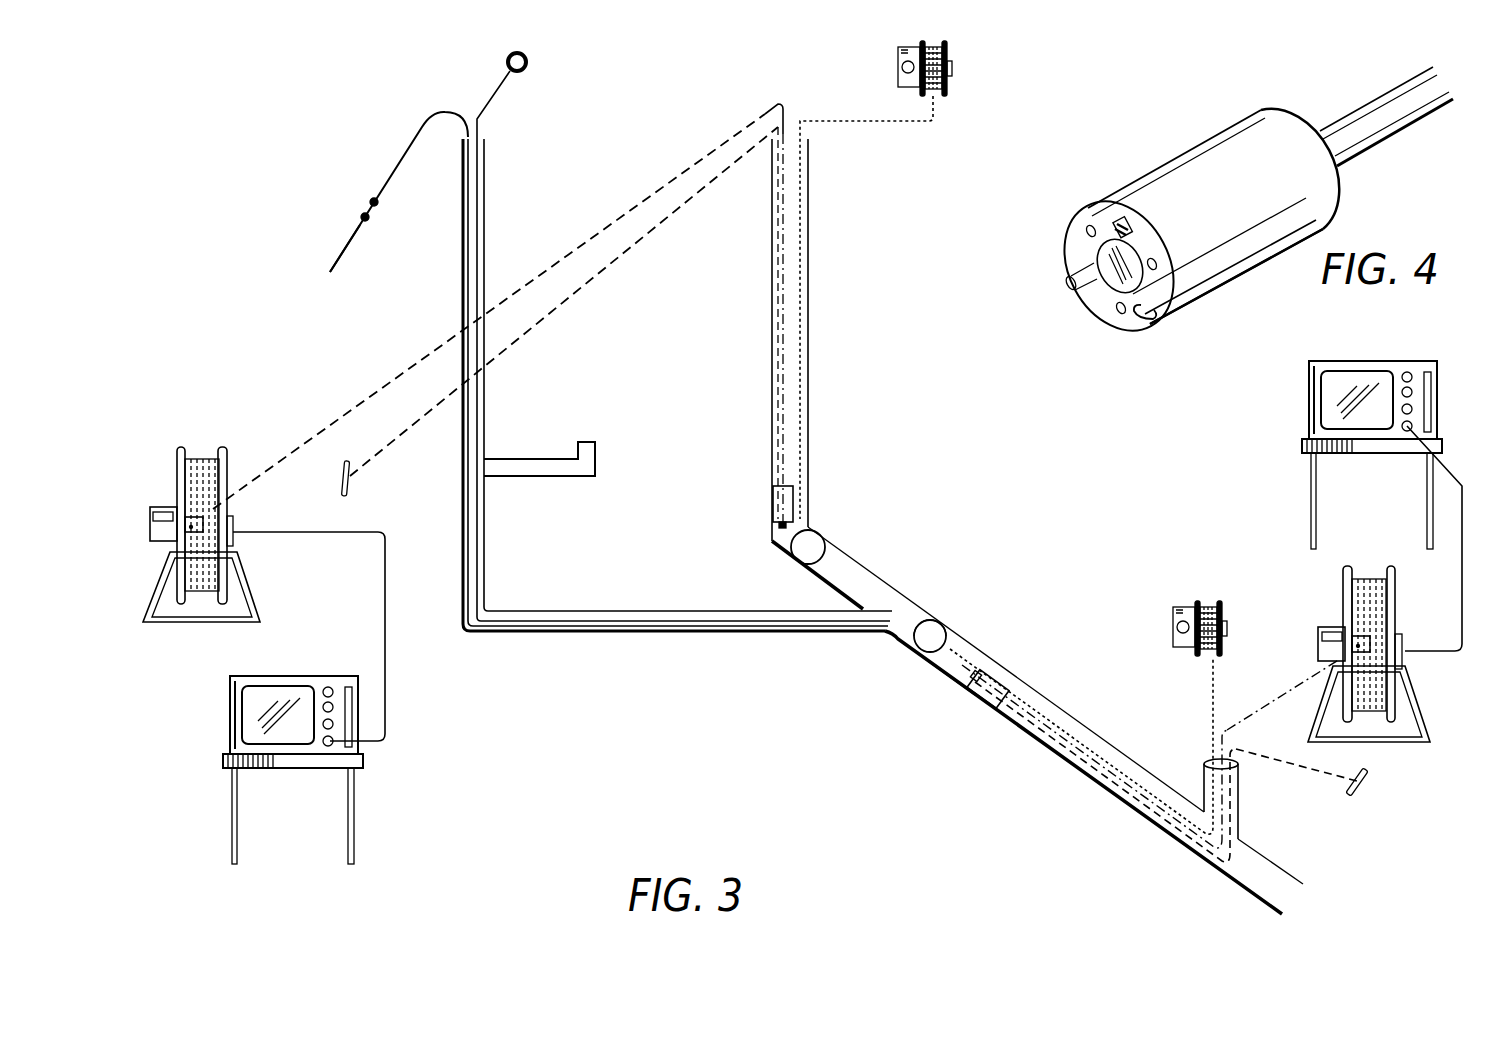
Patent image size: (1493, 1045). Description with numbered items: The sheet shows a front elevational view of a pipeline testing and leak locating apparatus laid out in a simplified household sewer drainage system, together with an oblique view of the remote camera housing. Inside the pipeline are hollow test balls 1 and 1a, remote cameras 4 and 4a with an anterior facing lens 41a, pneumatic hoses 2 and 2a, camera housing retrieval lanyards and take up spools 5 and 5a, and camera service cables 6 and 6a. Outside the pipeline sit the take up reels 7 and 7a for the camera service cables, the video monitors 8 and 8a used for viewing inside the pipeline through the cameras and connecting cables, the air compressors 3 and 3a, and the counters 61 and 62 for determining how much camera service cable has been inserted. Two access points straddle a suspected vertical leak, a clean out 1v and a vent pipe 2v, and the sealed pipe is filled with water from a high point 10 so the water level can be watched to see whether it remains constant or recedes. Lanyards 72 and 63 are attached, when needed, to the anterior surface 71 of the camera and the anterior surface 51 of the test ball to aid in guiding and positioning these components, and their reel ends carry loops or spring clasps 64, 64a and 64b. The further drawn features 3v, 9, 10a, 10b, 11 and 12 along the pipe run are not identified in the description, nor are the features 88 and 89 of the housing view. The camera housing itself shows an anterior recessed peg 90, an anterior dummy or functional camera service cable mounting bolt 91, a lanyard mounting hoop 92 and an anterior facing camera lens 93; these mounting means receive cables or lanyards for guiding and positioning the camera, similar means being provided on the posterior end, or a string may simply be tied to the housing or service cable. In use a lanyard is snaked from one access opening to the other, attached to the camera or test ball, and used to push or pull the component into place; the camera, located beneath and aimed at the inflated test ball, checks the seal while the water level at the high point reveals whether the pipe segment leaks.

In FIG. 3, the hollow test ball 1 is at (936, 624).
In FIG. 3, the hollow test ball 1a is at (808, 540).
In FIG. 3, the clean out 1v is at (1240, 790).
In FIG. 3, the pneumatic hose 2 is at (1105, 745).
In FIG. 3, the pneumatic hose 2a is at (936, 115).
In FIG. 3, the vent pipe 2v is at (485, 190).
In FIG. 3, the air compressor 3 is at (1190, 612).
In FIG. 3, the air compressor 3a is at (953, 70).
In FIG. 3, the vertical cable 3v is at (810, 162).
In FIG. 3, the remote camera 4 is at (987, 700).
In FIG. 3, the remote camera 4a is at (773, 502).
In FIG. 3, the camera housing retrieval lanyard and take up spool 5 is at (1366, 779).
In FIG. 3, the camera housing retrieval lanyard and take up spool 5a is at (348, 488).
In FIG. 3, the camera service cable 6 is at (1448, 482).
In FIG. 3, the camera service cable 6a is at (392, 396).
In FIG. 3, the take up reel 7 is at (1397, 594).
In FIG. 3, the take up reel 7a is at (185, 448).
In FIG. 3, the video monitor 8 is at (1362, 362).
In FIG. 3, the video monitor 8a is at (290, 682).
In FIG. 3, the vertical channel 9 is at (812, 402).
In FIG. 3, the high point 10 is at (596, 455).
In FIG. 3, the vertical conduit portion 10a is at (486, 388).
In FIG. 3, the horizontal conduit portion 10b is at (690, 635).
In FIG. 3, the conduit bottom wall 11 is at (872, 645).
In FIG. 3, the duct top wall 12 is at (835, 565).
In FIG. 3, the anterior facing lens 41a is at (779, 528).
In FIG. 3, the anterior surface of the test ball 51 is at (927, 620).
In FIG. 3, the counter 61 is at (1318, 650).
In FIG. 3, the counter 62 is at (152, 514).
In FIG. 3, the lanyard 63 is at (479, 137).
In FIG. 3, the loop or spring clasp 64 is at (528, 64).
In FIG. 3, the loop or spring clasp 64a is at (366, 200).
In FIG. 3, the loop or spring clasp 64b is at (330, 268).
In FIG. 3, the anterior surface of the camera 71 is at (972, 682).
In FIG. 3, the lanyard 72 is at (443, 110).
In FIG. 4, the cable 88 is at (1377, 126).
In FIG. 4, the probe housing 89 is at (1219, 240).
In FIG. 4, the anterior recessed peg 90 is at (1118, 208).
In FIG. 4, the camera service cable mounting bolt 91 is at (1055, 265).
In FIG. 4, the lanyard mounting hoop 92 is at (1138, 312).
In FIG. 4, the anterior facing camera lens 93 is at (1100, 278).